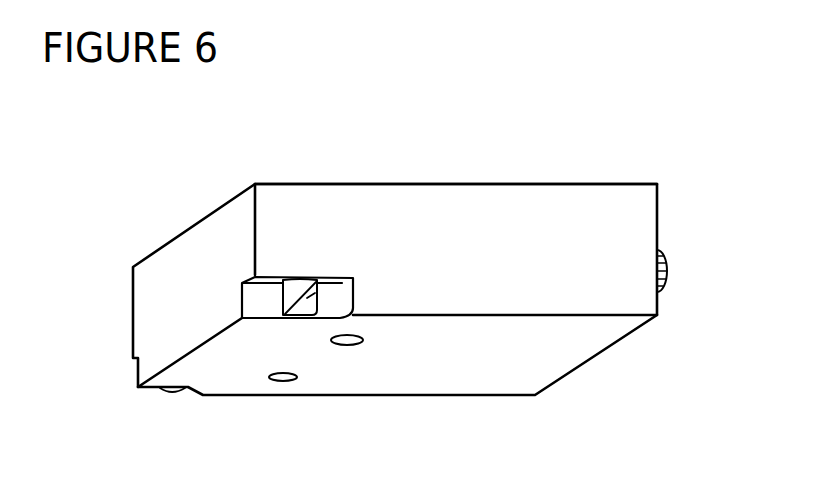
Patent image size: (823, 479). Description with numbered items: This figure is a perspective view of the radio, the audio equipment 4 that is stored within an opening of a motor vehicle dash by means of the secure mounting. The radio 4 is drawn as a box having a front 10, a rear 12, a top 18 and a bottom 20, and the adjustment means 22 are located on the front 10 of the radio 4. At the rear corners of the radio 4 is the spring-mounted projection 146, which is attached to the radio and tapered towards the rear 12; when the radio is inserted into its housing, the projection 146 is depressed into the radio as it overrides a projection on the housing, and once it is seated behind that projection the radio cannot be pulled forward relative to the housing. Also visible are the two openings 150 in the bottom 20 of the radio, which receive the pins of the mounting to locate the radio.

The audio equipment 4 is at (478, 215).
The front 10 is at (665, 220).
The rear 12 is at (147, 310).
The top 18 is at (343, 180).
The bottom 20 is at (471, 370).
The adjustment means 22 is at (667, 272).
The spring-mounted projection 146 is at (342, 279).
The openings 150 is at (283, 381).